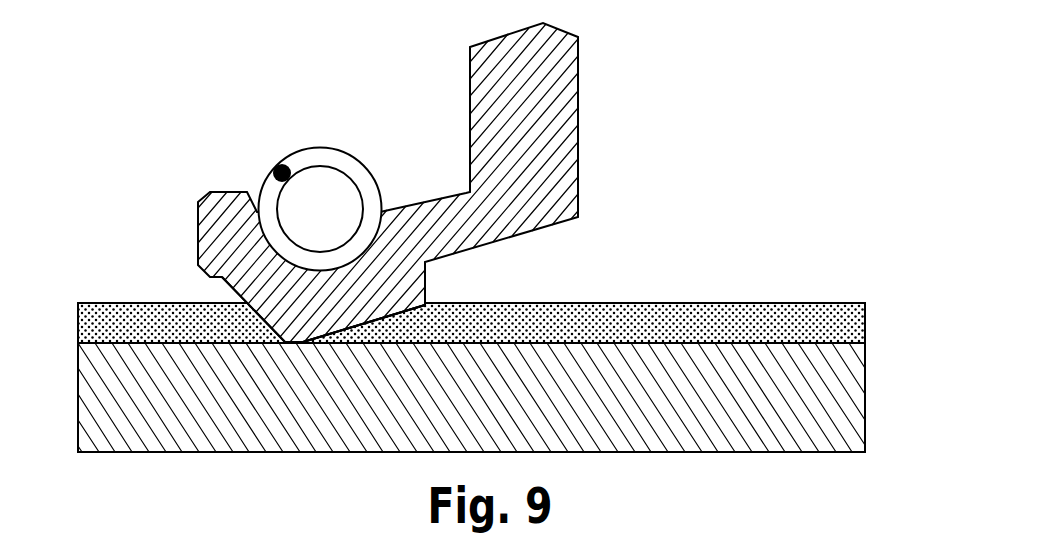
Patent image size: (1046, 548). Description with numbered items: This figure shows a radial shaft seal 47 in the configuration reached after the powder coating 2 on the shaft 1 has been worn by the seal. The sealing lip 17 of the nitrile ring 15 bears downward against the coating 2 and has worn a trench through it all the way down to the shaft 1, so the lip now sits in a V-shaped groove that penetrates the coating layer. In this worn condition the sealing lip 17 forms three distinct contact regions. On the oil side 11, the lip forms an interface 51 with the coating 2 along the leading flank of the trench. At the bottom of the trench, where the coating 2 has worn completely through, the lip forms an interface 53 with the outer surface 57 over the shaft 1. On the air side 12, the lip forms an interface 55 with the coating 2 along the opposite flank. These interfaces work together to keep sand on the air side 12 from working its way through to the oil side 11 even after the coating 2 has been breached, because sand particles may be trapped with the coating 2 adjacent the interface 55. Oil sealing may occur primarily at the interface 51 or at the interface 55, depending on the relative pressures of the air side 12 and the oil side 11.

The shaft 1 is at (847, 405).
The powder coating 2 is at (850, 327).
The oil side 11 is at (124, 280).
The air side 12 is at (646, 253).
The nitrile ring 15 is at (550, 153).
The sealing lip 17 is at (307, 322).
The radial shaft seal 47 is at (163, 235).
The interface with the coating on the oil side 51 is at (263, 318).
The interface with the outer surface of the shaft 53 is at (298, 342).
The interface with the coating on the air side 55 is at (347, 330).
The outer surface 57 is at (614, 338).